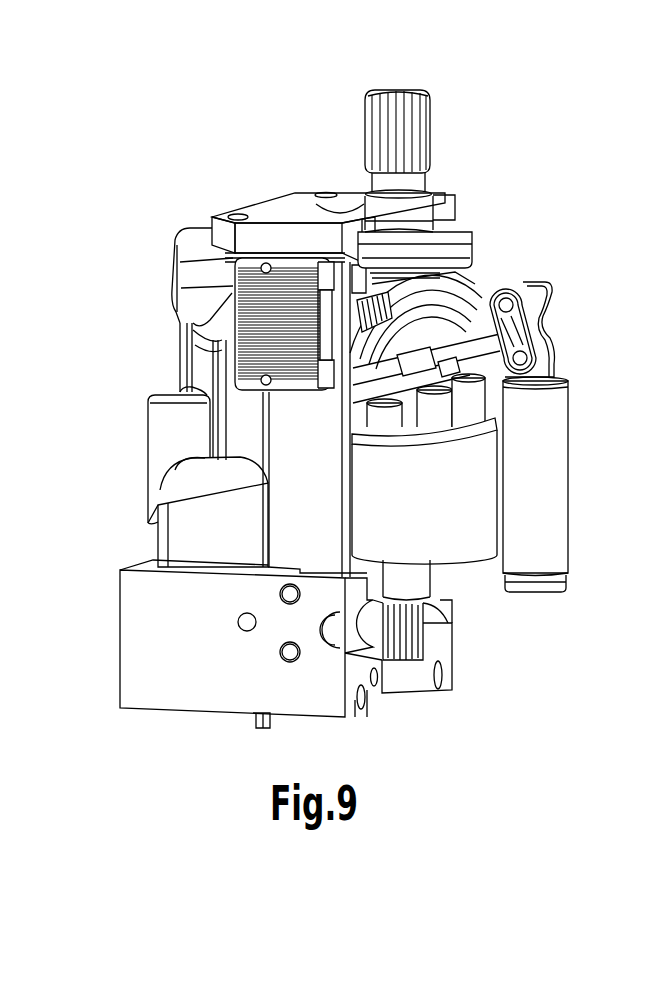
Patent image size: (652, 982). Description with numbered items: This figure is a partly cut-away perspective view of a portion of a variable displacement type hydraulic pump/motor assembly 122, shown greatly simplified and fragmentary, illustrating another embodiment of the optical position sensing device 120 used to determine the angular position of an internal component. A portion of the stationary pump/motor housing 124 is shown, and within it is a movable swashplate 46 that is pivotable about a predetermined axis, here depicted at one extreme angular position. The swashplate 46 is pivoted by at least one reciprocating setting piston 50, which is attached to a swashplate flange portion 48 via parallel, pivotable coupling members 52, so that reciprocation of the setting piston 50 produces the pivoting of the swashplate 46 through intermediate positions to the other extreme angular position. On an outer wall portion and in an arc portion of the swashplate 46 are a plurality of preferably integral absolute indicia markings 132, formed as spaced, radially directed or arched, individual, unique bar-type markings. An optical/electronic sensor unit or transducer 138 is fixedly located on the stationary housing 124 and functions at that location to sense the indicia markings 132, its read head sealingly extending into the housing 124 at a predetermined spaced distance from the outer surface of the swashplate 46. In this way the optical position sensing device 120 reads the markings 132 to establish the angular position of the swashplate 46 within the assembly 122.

The optical position sensing device 120 is at (265, 188).
The variable displacement type hydraulic pump/motor assembly 122 is at (482, 100).
The stationary pump/motor housing 124 is at (165, 628).
The absolute indicia markings 132 is at (410, 285).
The optical/electronic sensor unit 138 is at (207, 312).
The swashplate 46 is at (484, 295).
The swashplate flange portion 48 is at (518, 283).
The reciprocating setting piston 50 is at (548, 472).
The coupling members 52 is at (540, 363).